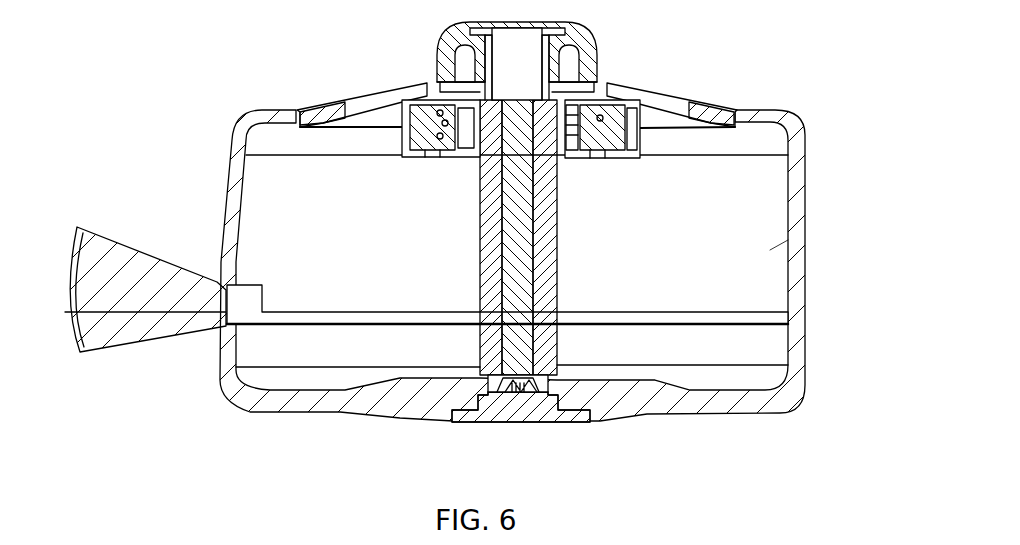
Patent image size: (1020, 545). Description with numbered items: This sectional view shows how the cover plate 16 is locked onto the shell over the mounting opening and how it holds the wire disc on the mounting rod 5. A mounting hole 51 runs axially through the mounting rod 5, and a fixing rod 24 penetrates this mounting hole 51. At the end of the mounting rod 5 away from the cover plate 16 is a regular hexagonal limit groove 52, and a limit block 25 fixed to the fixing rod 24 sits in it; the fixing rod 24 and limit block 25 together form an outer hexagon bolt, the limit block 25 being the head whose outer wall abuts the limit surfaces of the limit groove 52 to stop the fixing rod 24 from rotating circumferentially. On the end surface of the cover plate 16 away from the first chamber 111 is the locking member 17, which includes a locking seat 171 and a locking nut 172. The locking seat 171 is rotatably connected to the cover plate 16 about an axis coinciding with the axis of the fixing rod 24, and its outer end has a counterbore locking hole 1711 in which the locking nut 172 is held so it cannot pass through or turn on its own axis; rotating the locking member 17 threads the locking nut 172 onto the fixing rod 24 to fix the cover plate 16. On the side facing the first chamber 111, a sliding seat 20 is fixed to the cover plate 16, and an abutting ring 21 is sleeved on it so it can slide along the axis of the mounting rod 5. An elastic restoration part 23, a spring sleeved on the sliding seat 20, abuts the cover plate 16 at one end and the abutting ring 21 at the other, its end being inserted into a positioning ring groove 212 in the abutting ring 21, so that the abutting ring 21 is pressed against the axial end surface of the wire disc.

The mounting rod 5 is at (484, 322).
The cover plate 16 is at (792, 130).
The locking member 17 is at (542, 61).
The locking seat 171 is at (592, 60).
The locking hole 1711 is at (457, 58).
The locking nut 172 is at (600, 78).
The sliding seat 20 is at (470, 150).
The abutting ring 21 is at (590, 150).
The positioning ring groove 212 is at (612, 138).
The elastic restoration part 23 is at (410, 100).
The fixing rod 24 is at (520, 265).
The limit block 25 is at (490, 410).
The mounting hole 51 is at (495, 255).
The limit groove 52 is at (567, 405).
The first chamber 111 is at (826, 240).